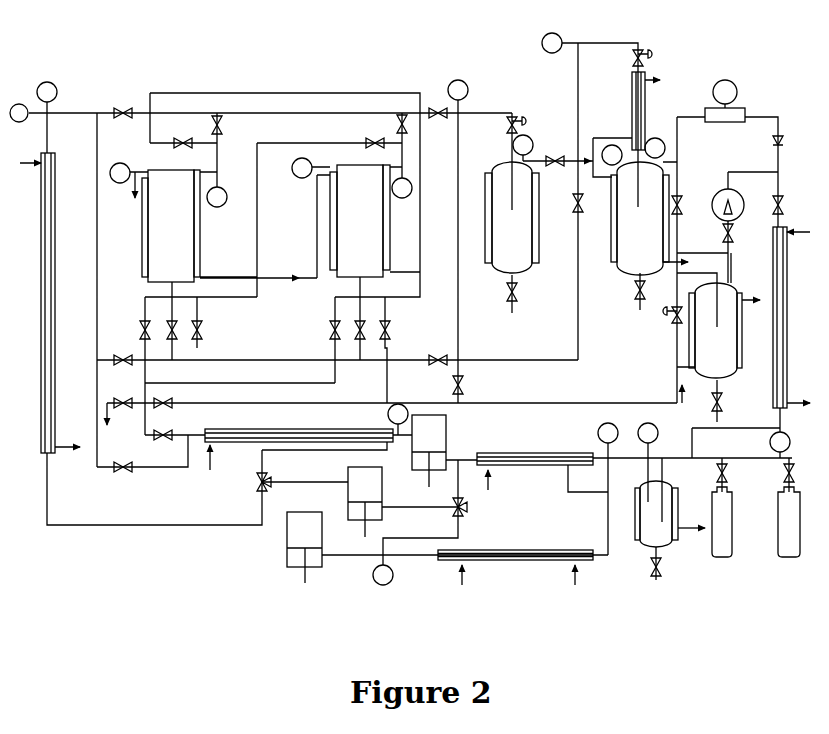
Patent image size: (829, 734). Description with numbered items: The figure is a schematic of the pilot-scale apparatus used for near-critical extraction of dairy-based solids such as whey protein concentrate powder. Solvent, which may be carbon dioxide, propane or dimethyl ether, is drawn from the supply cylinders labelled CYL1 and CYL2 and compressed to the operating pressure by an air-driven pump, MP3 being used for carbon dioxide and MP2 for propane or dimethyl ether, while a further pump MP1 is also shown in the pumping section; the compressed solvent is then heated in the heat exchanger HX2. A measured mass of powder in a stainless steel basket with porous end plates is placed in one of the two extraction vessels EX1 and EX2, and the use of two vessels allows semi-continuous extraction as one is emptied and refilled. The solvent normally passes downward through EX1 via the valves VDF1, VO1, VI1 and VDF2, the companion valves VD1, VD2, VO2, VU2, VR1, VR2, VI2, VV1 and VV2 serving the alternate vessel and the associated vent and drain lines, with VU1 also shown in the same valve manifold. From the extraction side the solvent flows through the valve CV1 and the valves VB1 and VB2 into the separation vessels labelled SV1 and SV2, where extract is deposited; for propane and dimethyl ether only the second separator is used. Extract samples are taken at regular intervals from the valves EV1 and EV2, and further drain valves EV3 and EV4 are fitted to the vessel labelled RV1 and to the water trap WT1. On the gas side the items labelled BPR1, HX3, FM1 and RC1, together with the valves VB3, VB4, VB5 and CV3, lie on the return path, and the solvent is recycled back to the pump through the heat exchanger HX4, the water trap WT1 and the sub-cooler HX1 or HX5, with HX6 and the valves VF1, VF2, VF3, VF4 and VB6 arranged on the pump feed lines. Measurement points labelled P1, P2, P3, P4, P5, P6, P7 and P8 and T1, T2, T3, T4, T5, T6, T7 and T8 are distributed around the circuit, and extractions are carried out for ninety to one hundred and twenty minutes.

The pressure sensor P2 is at (47, 92).
The temperature sensor T3 is at (19, 113).
The valve VDF1 is at (124, 107).
The valve VO1 is at (228, 125).
The valve VD1 is at (182, 150).
The pressure sensor P3 is at (120, 173).
The temperature sensor T4 is at (217, 197).
The extraction vessel EX1 is at (182, 226).
The heat exchanger HX2 is at (36, 303).
The pressure sensor P5 is at (458, 96).
The valve VU2 is at (438, 119).
The valve VO2 is at (392, 124).
The valve VD2 is at (374, 150).
The pressure sensor P4 is at (302, 168).
The temperature sensor T5 is at (402, 188).
The extraction vessel EX2 is at (371, 221).
The control valve CV1 is at (505, 125).
The pressure sensor P6 is at (523, 145).
The separator vessel SV1 is at (523, 217).
The valve VB1 is at (555, 155).
The valve VB2 is at (569, 203).
The extract sampling valve EV1 is at (523, 294).
The temperature sensor T6 is at (552, 43).
The back pressure regulator BPR1 is at (628, 58).
The heat exchanger HX3 is at (650, 111).
The temperature sensor T7 is at (612, 155).
The pressure sensor P7 is at (655, 148).
The separator vessel SV2 is at (631, 218).
The extract sampling valve EV2 is at (651, 291).
The flow meter FM1 is at (725, 101).
The recirculation compressor RC1 is at (726, 199).
The valve VB3 is at (688, 205).
The valve VB4 is at (739, 233).
The valve VB5 is at (789, 205).
The heat exchanger HX4 is at (792, 317).
The control valve CV3 is at (667, 322).
The receiver vessel RV1 is at (727, 330).
The drain valve EV3 is at (727, 401).
The valve VR1 is at (135, 330).
The valve VI1 is at (166, 330).
The vent valve VV1 is at (207, 330).
The valve VR2 is at (325, 330).
The valve VI2 is at (354, 330).
The vent valve VV2 is at (395, 330).
The valve VU1 is at (123, 367).
The valve VDF2 is at (440, 354).
The valve VF4 is at (468, 385).
The valve VF3 is at (125, 410).
The valve VF2 is at (164, 410).
The valve VF1 is at (164, 442).
The valve VB6 is at (124, 474).
The heat exchanger HX6 is at (299, 429).
The pressure sensor P1 is at (398, 414).
The metering pump MP1 is at (442, 451).
The sub-cooler HX5 is at (535, 452).
The temperature sensor T1 is at (608, 433).
The pressure sensor P8 is at (648, 433).
The temperature sensor T8 is at (780, 442).
The air driven pump MP2 is at (407, 502).
The air driven pump MP3 is at (301, 528).
The temperature sensor T2 is at (383, 575).
The sub-cooler HX1 is at (515, 549).
The water trap WT1 is at (670, 514).
The drain valve EV4 is at (667, 563).
The gas cylinder CYL1 is at (719, 519).
The gas cylinder CYL2 is at (787, 519).